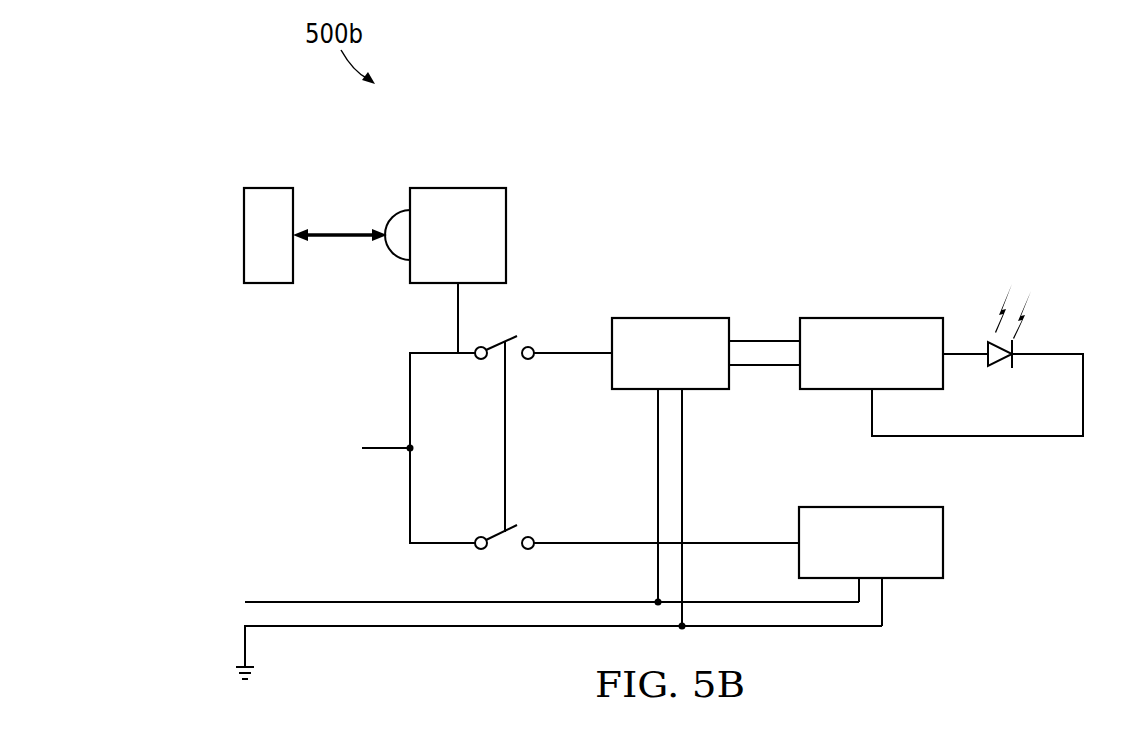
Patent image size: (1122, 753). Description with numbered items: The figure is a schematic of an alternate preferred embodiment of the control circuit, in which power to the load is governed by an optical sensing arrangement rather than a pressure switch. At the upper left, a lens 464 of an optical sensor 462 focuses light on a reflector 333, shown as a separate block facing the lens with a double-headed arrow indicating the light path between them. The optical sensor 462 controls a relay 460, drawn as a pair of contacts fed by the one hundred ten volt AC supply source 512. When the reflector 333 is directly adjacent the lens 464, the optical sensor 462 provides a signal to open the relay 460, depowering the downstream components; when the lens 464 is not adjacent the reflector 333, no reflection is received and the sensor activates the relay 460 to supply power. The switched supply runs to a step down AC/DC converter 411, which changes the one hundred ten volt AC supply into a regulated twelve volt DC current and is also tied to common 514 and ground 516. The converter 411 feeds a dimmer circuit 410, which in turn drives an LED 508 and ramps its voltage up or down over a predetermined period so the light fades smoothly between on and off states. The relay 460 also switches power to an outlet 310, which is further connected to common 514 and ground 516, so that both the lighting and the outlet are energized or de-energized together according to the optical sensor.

The reflector 333 is at (244, 226).
The optical sensor 462 is at (506, 224).
The lens 464 is at (393, 215).
The relay 460 is at (410, 497).
The 110 VAC supply source 512 is at (375, 447).
The step down AC/DC converter 411 is at (668, 318).
The dimmer circuit 410 is at (882, 318).
The LED 508 is at (1005, 369).
The outlet 310 is at (943, 556).
The common 514 is at (130, 602).
The ground 516 is at (245, 648).